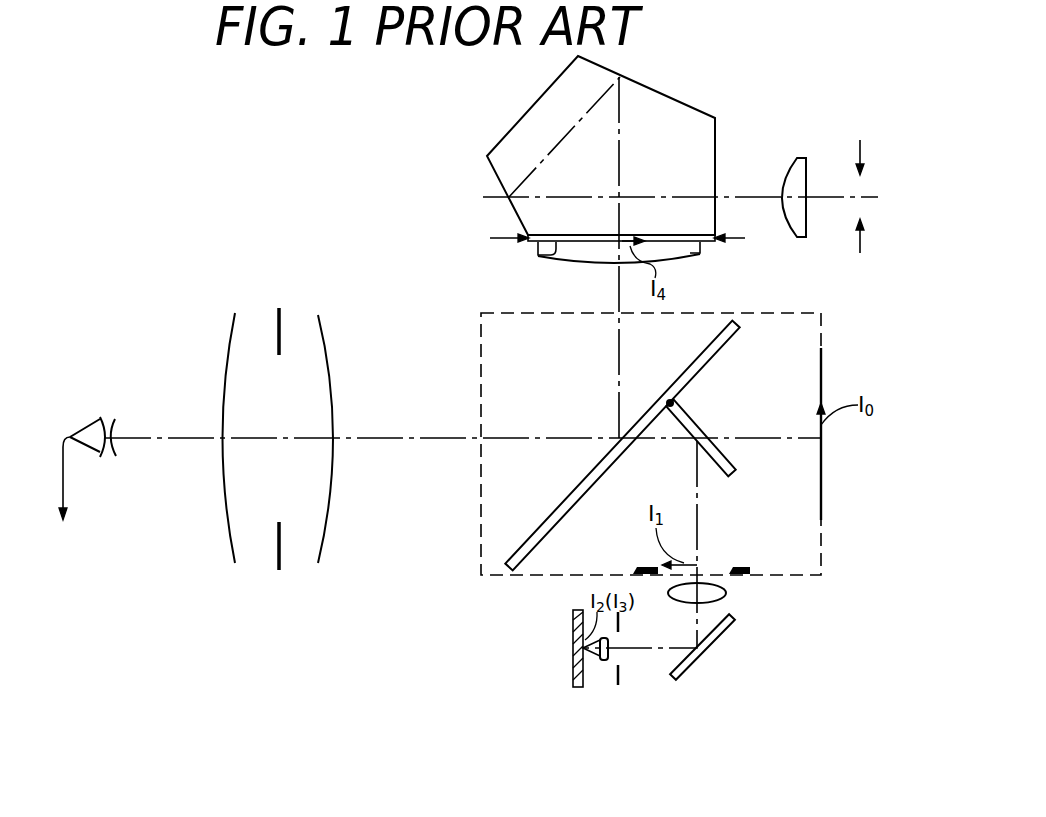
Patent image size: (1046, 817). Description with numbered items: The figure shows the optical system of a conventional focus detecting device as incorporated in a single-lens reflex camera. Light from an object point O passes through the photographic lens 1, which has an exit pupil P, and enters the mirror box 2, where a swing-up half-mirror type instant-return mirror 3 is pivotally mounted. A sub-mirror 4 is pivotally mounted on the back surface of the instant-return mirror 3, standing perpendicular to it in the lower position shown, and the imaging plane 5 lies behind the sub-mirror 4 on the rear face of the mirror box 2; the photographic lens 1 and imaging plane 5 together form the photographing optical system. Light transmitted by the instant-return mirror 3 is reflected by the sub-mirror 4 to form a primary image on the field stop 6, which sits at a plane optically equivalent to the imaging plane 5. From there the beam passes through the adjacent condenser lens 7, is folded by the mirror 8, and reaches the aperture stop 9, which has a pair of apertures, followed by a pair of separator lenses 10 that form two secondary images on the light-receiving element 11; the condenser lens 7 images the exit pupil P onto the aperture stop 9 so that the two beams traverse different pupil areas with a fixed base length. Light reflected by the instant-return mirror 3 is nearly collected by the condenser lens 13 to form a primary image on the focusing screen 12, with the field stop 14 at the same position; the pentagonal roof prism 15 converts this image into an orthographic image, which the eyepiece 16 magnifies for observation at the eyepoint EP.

The photographic lens 1 is at (249, 562).
The mirror box 2 is at (480, 540).
The instant-return mirror 3 is at (512, 568).
The sub-mirror 4 is at (700, 425).
The imaging plane 5 is at (821, 470).
The field stop 6 is at (745, 568).
The condenser lens 7 is at (726, 596).
The mirror 8 is at (718, 640).
The aperture stop 9 is at (621, 677).
The separator lenses 10 is at (607, 662).
The light-receiving element 11 is at (573, 675).
The focusing screen 12 is at (548, 258).
The condenser lens 13 is at (690, 258).
The field stop 14 is at (497, 235).
The pentagonal roof prism 15 is at (705, 114).
The eyepiece 16 is at (795, 160).
The exit pupil P is at (278, 311).
The object point O is at (87, 476).
The eyepoint EP is at (878, 196).